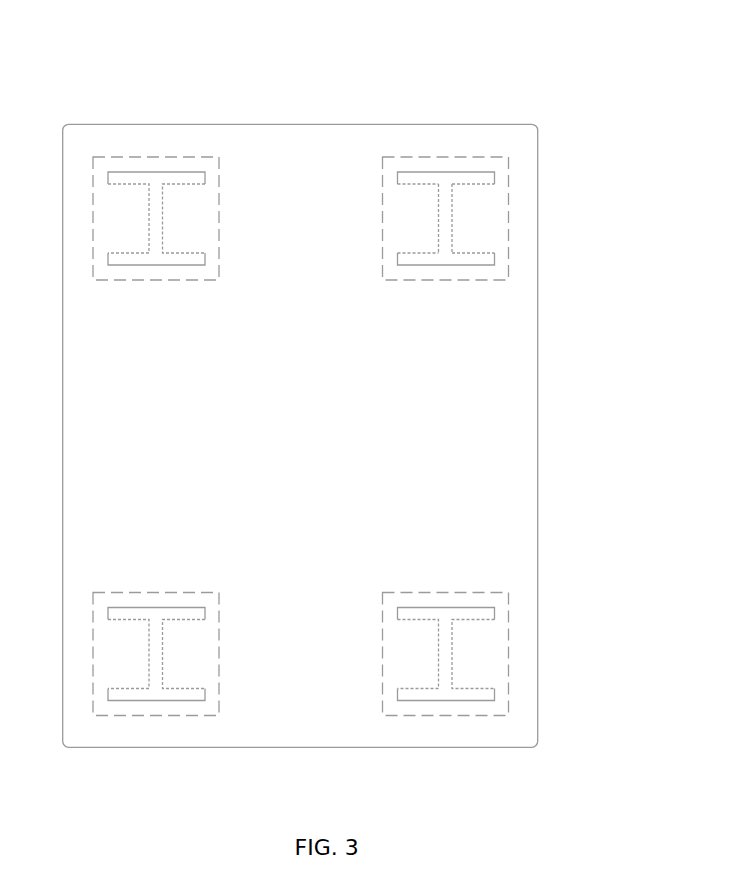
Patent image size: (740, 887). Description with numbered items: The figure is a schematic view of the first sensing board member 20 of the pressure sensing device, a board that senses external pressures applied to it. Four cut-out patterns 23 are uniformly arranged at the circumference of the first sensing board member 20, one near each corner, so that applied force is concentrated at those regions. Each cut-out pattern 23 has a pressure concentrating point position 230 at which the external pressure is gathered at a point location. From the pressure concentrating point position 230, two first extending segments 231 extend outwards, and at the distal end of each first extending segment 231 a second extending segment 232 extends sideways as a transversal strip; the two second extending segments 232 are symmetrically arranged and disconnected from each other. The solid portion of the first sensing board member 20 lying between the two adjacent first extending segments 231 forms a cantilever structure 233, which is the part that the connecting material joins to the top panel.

The first sensing board member 20 is at (279, 144).
The cut-out pattern 23 is at (509, 173).
The pressure concentrating point position 230 is at (516, 189).
The first extending segment 231 is at (445, 243).
The second extending segment 232 is at (480, 179).
The cantilever structure 233 is at (467, 205).